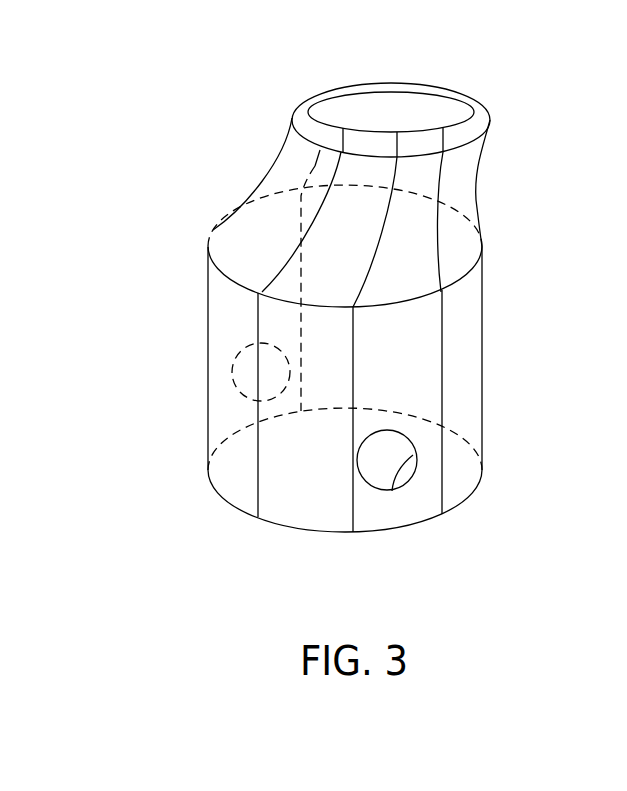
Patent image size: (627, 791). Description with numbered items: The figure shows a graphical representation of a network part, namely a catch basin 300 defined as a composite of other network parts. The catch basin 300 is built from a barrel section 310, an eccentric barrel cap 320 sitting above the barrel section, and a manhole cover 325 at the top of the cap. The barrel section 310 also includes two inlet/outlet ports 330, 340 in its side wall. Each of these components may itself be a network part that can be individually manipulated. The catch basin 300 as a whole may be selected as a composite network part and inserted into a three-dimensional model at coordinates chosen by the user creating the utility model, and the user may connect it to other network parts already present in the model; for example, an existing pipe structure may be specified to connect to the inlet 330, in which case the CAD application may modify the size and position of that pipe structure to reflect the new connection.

The catch basin 300 is at (218, 142).
The barrel section 310 is at (520, 237).
The eccentric barrel cap 320 is at (520, 105).
The manhole cover 325 is at (421, 100).
The inlet/outlet port 330 is at (233, 368).
The inlet/outlet port 340 is at (392, 491).